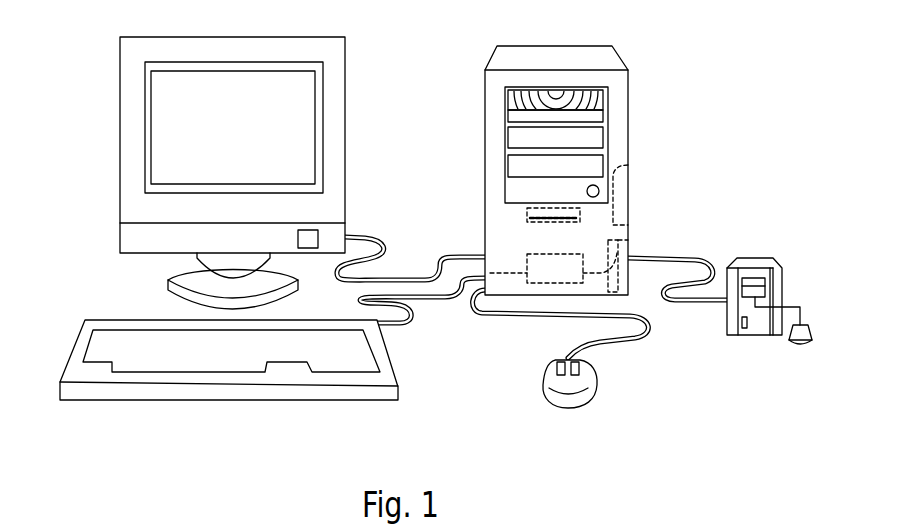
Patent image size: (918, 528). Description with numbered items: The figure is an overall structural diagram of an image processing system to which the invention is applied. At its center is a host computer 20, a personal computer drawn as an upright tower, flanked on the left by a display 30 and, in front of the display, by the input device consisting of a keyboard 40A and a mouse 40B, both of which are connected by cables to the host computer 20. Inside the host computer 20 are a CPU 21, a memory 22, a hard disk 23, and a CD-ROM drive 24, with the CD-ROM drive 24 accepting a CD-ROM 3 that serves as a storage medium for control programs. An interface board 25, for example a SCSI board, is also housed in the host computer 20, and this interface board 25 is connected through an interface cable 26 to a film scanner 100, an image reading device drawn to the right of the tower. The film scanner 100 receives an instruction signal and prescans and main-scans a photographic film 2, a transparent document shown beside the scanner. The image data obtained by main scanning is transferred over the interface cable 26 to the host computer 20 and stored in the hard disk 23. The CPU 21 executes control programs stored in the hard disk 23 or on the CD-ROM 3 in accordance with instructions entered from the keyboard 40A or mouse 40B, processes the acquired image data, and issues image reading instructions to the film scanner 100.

The display 30 is at (120, 88).
The host computer 20 is at (541, 147).
The CD-ROM drive 24 is at (558, 86).
The CD-ROM 3 is at (603, 108).
The memory 22 is at (630, 164).
The CPU 21 is at (628, 240).
The interface board 25 is at (527, 208).
The hard disk 23 is at (527, 256).
The interface cable 26 is at (700, 307).
The film scanner 100 is at (757, 249).
The photographic film 2 is at (800, 348).
The keyboard 40A is at (170, 393).
The mouse 40B is at (587, 410).